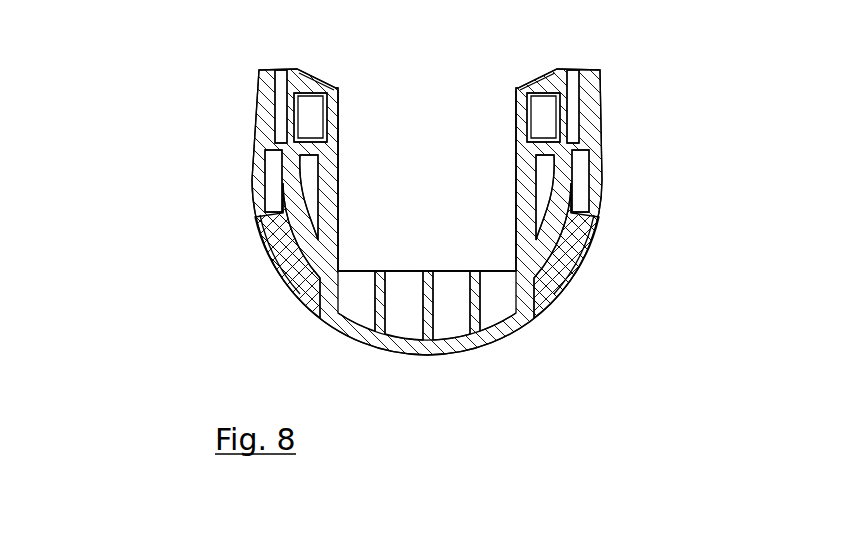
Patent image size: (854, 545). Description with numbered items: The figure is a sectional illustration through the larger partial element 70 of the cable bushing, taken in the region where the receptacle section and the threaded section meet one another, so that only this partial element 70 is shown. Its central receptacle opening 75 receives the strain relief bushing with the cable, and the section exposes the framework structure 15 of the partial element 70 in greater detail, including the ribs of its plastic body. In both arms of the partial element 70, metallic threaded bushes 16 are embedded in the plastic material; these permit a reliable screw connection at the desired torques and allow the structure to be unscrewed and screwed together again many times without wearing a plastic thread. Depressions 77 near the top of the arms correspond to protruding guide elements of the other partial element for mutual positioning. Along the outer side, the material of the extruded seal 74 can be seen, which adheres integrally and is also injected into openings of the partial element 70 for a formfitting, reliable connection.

The partial element 70 is at (241, 119).
The seal element 74 is at (567, 257).
The receptacle opening 75 is at (383, 225).
The framework structure 15 is at (450, 310).
The metallic threaded bushes 16 is at (298, 132).
The depressions 77 is at (283, 85).